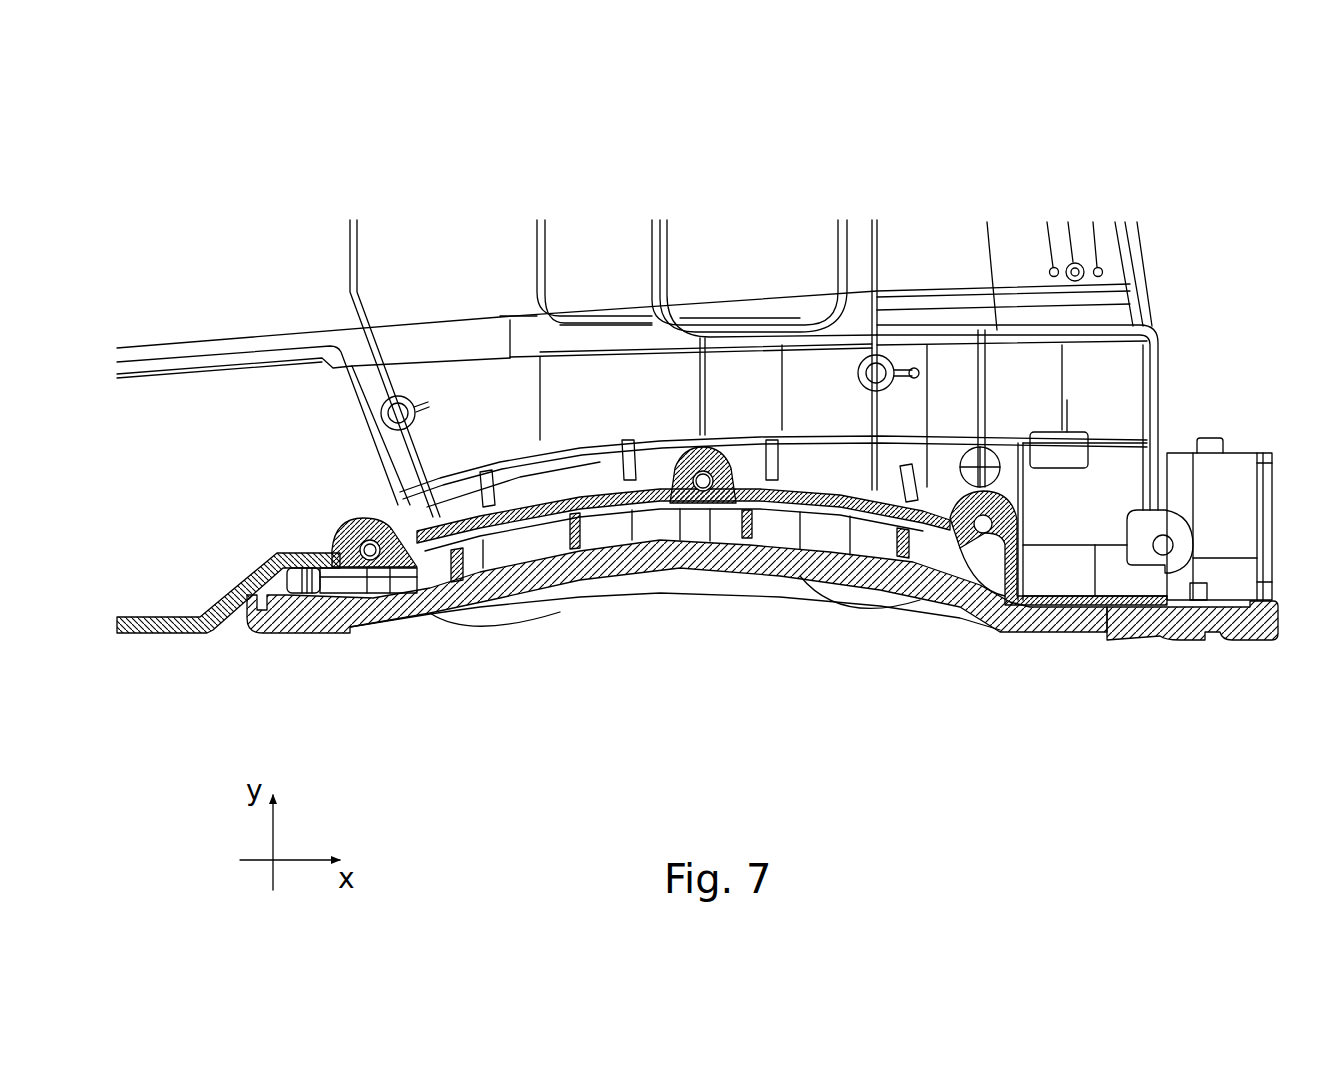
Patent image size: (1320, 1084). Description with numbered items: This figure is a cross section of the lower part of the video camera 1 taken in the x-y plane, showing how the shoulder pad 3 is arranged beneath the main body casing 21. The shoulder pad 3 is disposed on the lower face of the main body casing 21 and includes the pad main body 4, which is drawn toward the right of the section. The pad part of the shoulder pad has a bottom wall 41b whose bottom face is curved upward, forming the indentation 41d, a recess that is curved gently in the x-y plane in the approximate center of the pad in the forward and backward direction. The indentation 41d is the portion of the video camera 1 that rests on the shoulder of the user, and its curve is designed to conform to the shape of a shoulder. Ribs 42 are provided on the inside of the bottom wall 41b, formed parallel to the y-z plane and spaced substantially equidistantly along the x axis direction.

The video camera 1 is at (1155, 187).
The main body casing 21 is at (173, 617).
The shoulder pad 3 is at (268, 663).
The ribs 42 is at (547, 538).
The bottom wall 41b is at (775, 570).
The indentation 41d is at (707, 567).
The pad main body 4 is at (1163, 681).